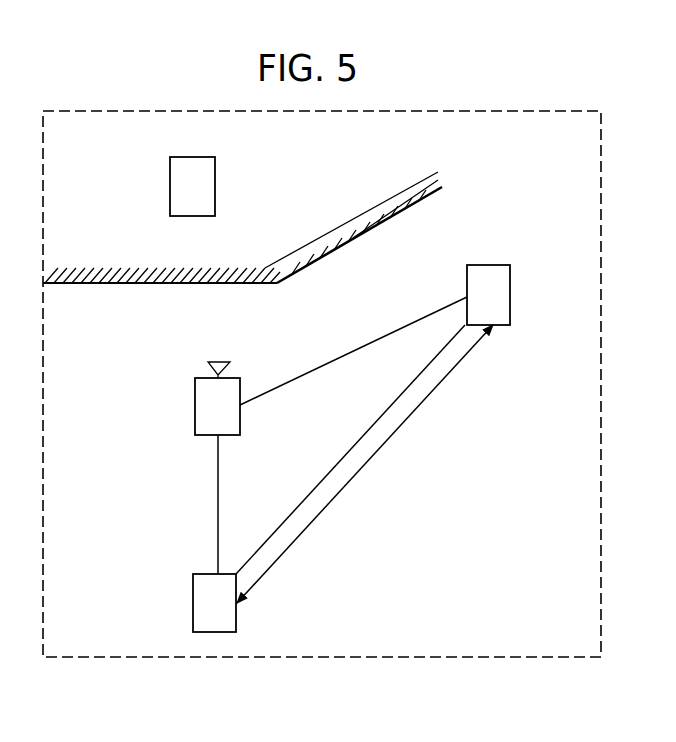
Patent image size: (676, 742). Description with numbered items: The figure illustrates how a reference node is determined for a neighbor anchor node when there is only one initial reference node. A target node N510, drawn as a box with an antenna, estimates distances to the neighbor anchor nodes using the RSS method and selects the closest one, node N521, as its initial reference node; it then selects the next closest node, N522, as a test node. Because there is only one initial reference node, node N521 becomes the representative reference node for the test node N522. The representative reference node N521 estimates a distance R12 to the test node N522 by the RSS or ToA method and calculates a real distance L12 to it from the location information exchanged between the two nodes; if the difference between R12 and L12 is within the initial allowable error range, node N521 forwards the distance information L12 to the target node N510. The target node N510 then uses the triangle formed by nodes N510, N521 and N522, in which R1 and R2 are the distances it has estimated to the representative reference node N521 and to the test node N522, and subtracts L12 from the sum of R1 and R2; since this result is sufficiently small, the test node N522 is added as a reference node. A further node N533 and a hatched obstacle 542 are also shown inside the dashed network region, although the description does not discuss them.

The node N533 is at (198, 157).
The obstacle wall 542 is at (460, 177).
The test node N522 is at (495, 265).
The target node N510 is at (230, 358).
The initial reference node N521 is at (196, 574).
The estimated distance from target node to test node R2 is at (352, 350).
The estimated distance from target node to representative reference node R1 is at (218, 503).
The real distance L12 is at (384, 413).
The estimated distance R12 is at (383, 445).